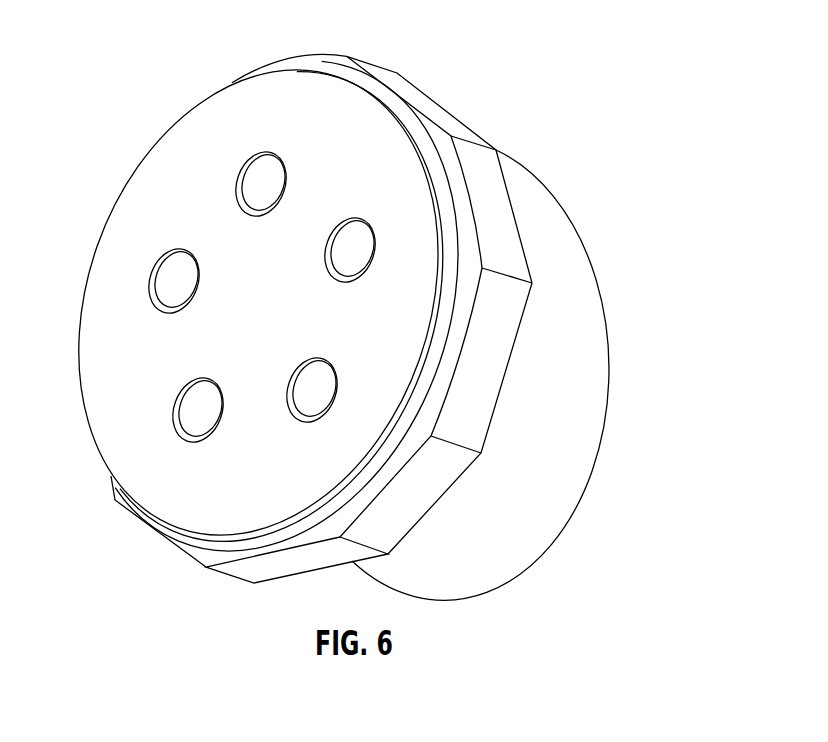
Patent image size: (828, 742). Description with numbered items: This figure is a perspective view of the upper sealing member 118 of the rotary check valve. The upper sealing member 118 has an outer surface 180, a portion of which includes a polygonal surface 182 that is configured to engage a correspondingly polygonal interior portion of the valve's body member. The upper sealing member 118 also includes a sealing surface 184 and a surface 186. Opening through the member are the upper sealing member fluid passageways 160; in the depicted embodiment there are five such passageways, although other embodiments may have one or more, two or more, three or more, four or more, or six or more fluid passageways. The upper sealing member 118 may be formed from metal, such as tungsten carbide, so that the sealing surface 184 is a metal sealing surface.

The upper sealing member 118 is at (141, 37).
The upper sealing member fluid passageways 160 is at (258, 192).
The outer surface 180 is at (500, 151).
The polygonal surface 182 is at (250, 562).
The sealing surface 184 is at (606, 380).
The surface 186 is at (186, 130).